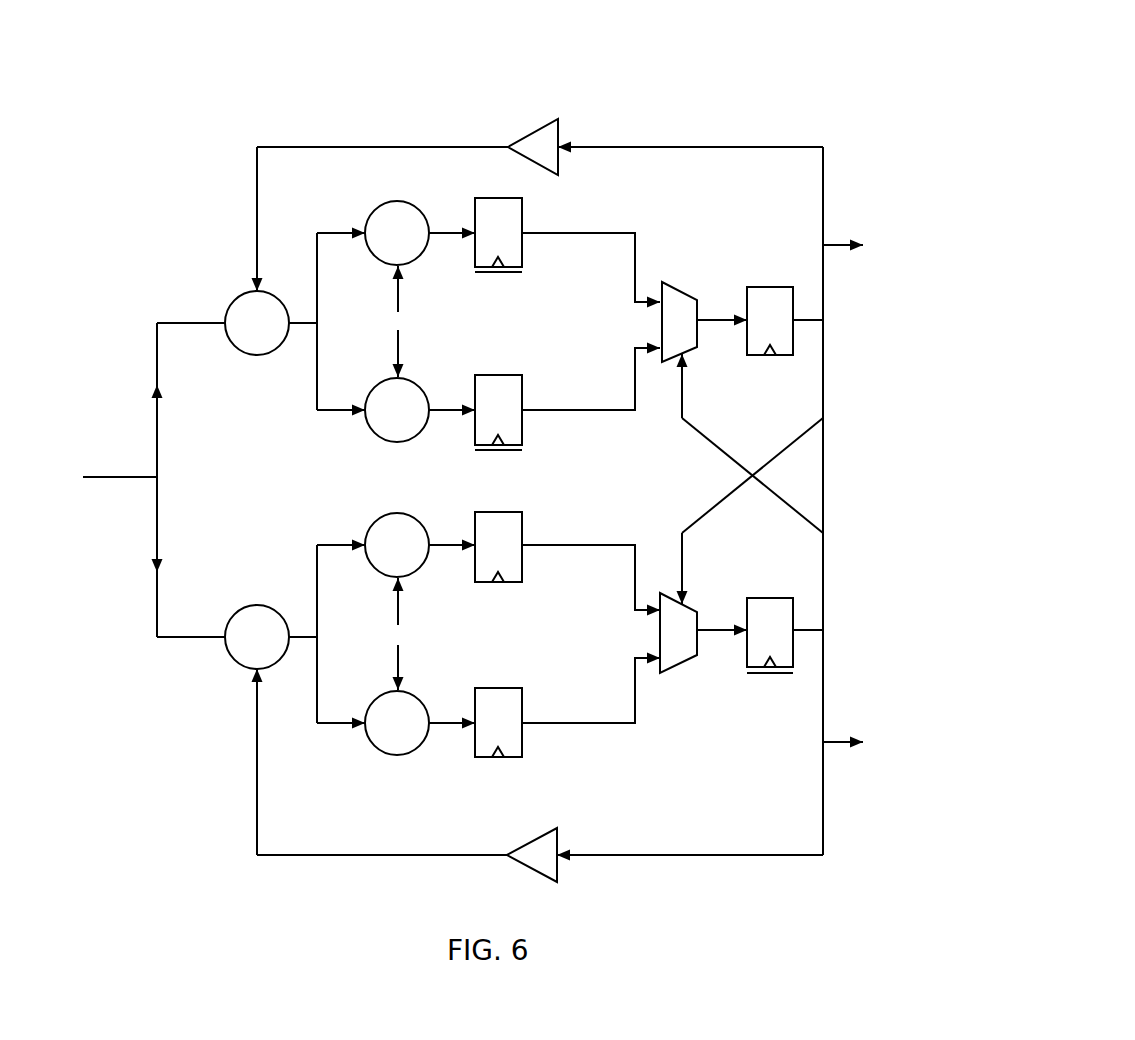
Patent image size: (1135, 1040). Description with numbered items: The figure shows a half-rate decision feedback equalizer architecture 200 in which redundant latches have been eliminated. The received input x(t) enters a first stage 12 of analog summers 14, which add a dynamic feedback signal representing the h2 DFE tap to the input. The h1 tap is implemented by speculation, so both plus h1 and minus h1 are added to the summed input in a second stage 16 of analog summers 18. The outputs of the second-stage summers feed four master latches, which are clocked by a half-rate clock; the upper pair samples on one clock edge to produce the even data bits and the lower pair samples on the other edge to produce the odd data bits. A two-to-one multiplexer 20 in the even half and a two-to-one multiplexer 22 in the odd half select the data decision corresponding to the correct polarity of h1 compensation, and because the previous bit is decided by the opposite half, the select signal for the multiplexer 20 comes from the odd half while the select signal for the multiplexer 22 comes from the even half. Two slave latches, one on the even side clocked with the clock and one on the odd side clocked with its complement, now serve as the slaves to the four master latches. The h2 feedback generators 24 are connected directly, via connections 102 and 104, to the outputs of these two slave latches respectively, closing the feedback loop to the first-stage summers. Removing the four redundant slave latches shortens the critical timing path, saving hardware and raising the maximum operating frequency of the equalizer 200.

The DFE architecture 200 is at (527, 33).
The first stage of analog summers 12 is at (263, 372).
The analog summer 14 is at (237, 348).
The second stage of analog summers 16 is at (412, 446).
The analog summer 18 is at (423, 253).
The 2:1 multiplexer 20 is at (666, 363).
The 2:1 multiplexer 22 is at (677, 676).
The h2 feedback generator 24 is at (560, 125).
The direct connection 102 is at (634, 147).
The direct connection 104 is at (710, 856).